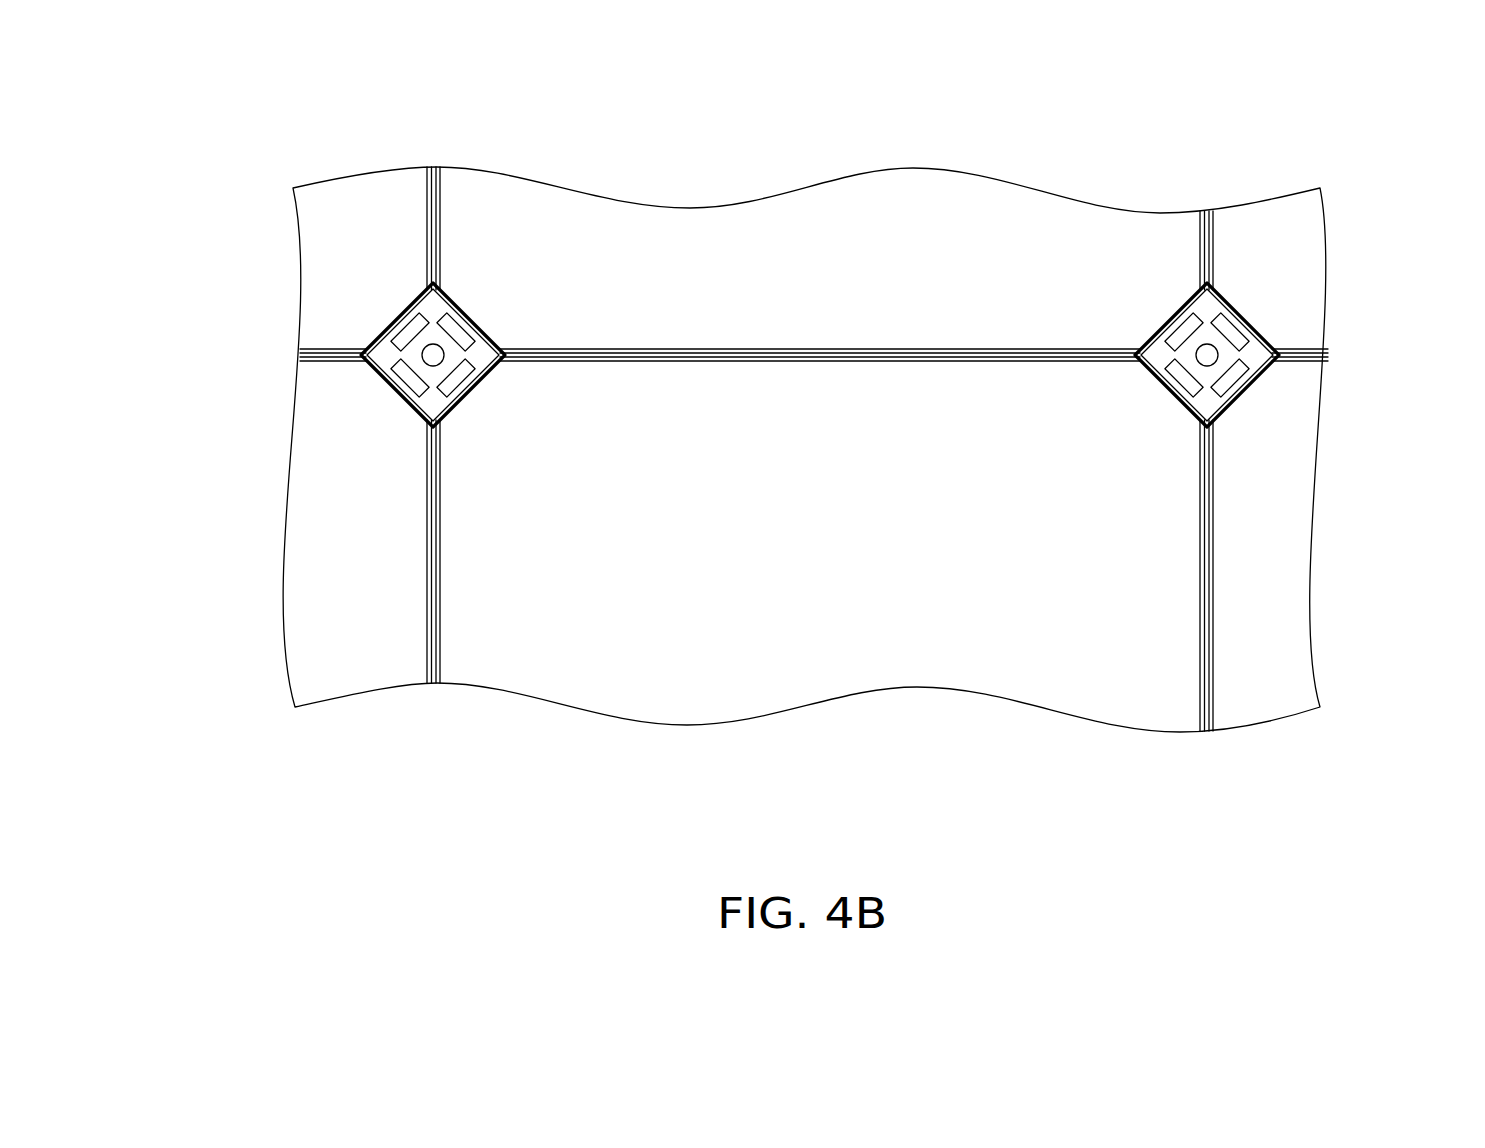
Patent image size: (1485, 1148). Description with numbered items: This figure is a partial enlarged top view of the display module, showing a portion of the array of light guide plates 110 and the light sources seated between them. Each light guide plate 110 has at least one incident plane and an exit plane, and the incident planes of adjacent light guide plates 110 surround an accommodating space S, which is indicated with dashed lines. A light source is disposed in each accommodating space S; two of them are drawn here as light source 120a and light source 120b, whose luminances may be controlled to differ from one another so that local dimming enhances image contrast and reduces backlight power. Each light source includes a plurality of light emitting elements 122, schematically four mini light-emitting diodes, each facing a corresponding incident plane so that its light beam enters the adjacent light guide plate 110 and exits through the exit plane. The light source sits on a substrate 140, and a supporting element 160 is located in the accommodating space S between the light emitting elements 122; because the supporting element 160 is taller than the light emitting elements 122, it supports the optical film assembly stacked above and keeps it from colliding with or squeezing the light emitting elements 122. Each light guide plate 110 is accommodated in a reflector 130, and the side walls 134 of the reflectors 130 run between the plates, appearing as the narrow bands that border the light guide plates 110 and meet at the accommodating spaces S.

The light guide plate 110 is at (330, 318).
The light source 120a is at (1207, 355).
The light source 120b is at (433, 355).
The light emitting element 122 is at (455, 332).
The reflector 130 is at (787, 449).
The side wall 134 is at (640, 350).
The substrate 140 is at (480, 352).
The supporting element 160 is at (1207, 355).
The accommodating space S is at (470, 315).